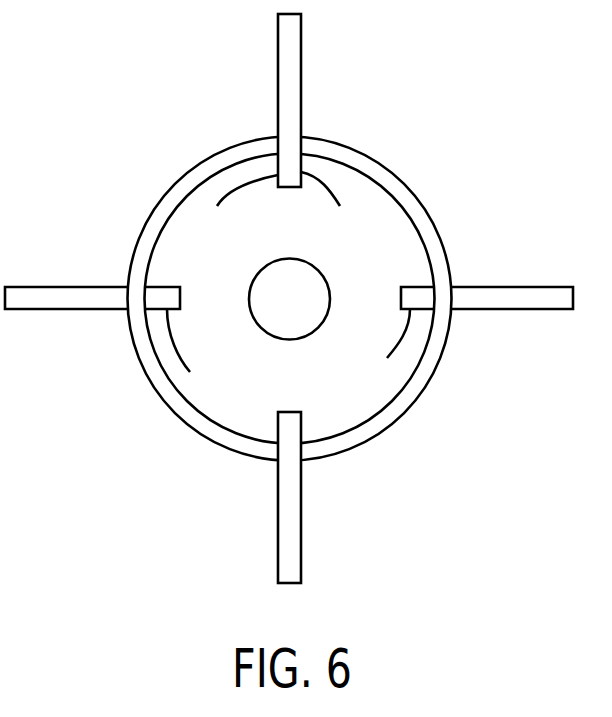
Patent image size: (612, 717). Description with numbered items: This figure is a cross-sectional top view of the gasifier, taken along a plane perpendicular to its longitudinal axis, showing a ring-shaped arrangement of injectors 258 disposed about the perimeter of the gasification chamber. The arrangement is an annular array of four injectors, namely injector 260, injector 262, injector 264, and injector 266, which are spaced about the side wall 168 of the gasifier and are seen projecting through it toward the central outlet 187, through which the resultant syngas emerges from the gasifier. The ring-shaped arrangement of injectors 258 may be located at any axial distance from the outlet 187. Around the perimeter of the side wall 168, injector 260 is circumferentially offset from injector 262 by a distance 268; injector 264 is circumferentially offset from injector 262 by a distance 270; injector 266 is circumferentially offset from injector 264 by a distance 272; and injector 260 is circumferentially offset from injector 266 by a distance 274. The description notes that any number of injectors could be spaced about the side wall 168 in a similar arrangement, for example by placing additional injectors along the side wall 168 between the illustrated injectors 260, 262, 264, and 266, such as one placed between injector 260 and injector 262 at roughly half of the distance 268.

The ring-shaped arrangement of injectors 258 is at (289, 296).
The side wall 168 is at (388, 416).
The injector 260 is at (301, 87).
The injector 262 is at (77, 287).
The injector 264 is at (274, 512).
The injector 266 is at (502, 310).
The distance 268 is at (163, 287).
The distance 270 is at (277, 424).
The distance 272 is at (302, 422).
The distance 274 is at (412, 287).
The outlet 187 is at (268, 314).